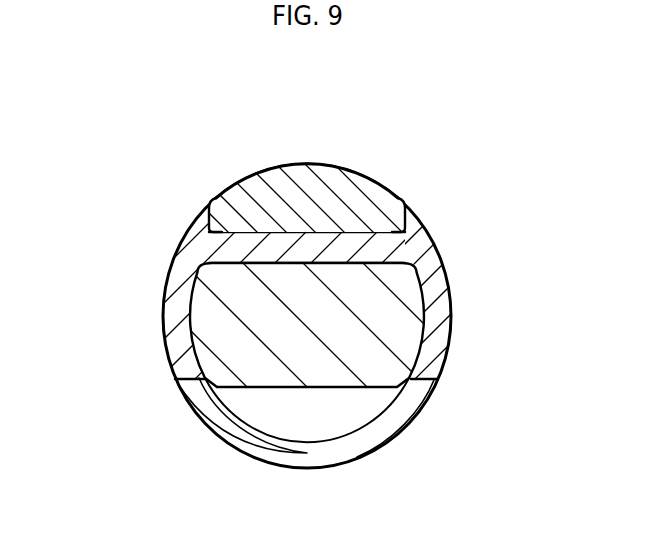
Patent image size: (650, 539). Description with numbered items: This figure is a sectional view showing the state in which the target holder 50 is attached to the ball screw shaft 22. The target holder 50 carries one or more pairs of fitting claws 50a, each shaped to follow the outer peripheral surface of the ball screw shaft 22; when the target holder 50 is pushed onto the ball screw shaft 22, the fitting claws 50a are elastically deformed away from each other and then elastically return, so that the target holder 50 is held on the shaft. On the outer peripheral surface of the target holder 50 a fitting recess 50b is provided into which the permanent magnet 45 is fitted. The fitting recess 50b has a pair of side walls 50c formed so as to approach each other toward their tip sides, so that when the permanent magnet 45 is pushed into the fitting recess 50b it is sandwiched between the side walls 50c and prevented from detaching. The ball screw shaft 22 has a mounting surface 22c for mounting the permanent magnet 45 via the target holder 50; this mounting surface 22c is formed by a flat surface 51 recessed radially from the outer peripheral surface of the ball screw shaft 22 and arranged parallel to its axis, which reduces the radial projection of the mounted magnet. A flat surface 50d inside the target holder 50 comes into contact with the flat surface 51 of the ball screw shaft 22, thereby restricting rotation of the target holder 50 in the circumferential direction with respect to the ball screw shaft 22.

The ball screw shaft 22 is at (325, 309).
The mounting surface 22c is at (272, 300).
The flat surface 51 is at (255, 262).
The permanent magnet 45 is at (268, 183).
The target holder 50 is at (325, 300).
The fitting claws 50a is at (181, 366).
The fitting recess 50b is at (348, 231).
The side walls 50c is at (212, 222).
The flat surface 50d is at (352, 267).